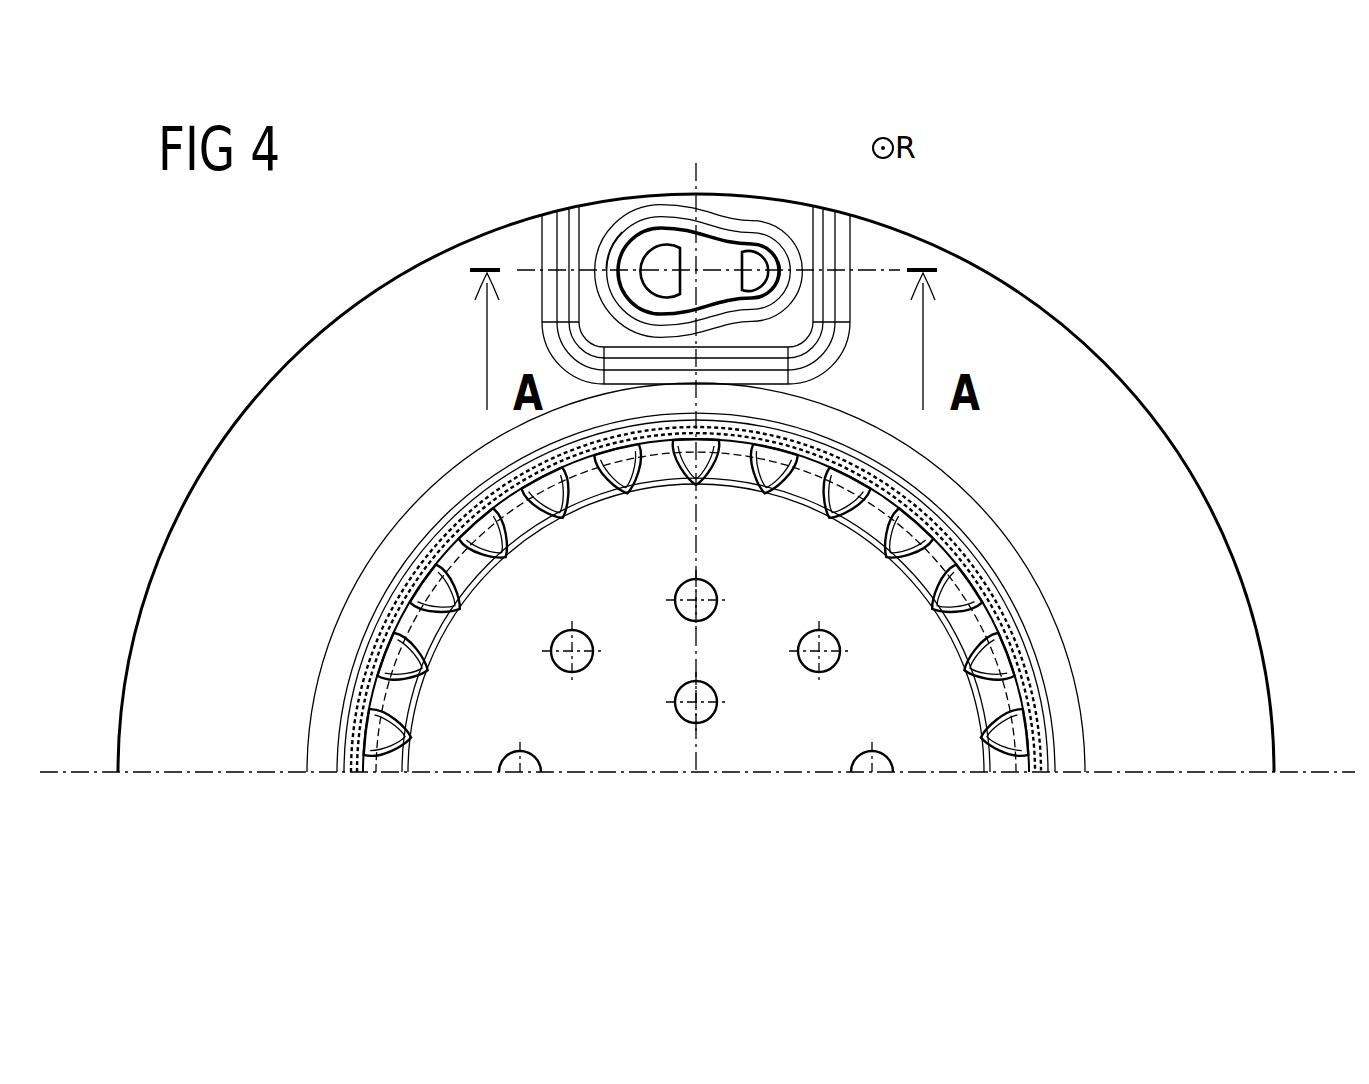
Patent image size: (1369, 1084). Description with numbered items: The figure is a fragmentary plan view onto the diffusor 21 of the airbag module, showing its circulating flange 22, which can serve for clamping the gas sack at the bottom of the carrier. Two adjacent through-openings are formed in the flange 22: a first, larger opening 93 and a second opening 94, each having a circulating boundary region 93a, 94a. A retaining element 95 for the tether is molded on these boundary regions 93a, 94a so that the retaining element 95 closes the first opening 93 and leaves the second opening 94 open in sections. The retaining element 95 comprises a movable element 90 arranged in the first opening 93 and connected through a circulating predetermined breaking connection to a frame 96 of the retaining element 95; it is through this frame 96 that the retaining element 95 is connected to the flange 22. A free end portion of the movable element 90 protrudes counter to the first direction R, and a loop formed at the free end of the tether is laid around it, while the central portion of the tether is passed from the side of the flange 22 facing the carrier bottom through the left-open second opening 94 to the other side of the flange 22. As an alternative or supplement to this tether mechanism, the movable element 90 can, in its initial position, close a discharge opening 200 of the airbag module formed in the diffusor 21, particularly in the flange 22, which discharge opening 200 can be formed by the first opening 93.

The diffusor 21 is at (368, 588).
The flange 22 is at (278, 418).
The movable element 90 is at (692, 255).
The first opening 93 is at (662, 262).
The boundary region 93a is at (633, 227).
The second opening 94 is at (757, 266).
The boundary region 94a is at (778, 257).
The retaining element 95 is at (607, 225).
The frame 96 is at (607, 253).
The discharge opening 200 is at (675, 262).